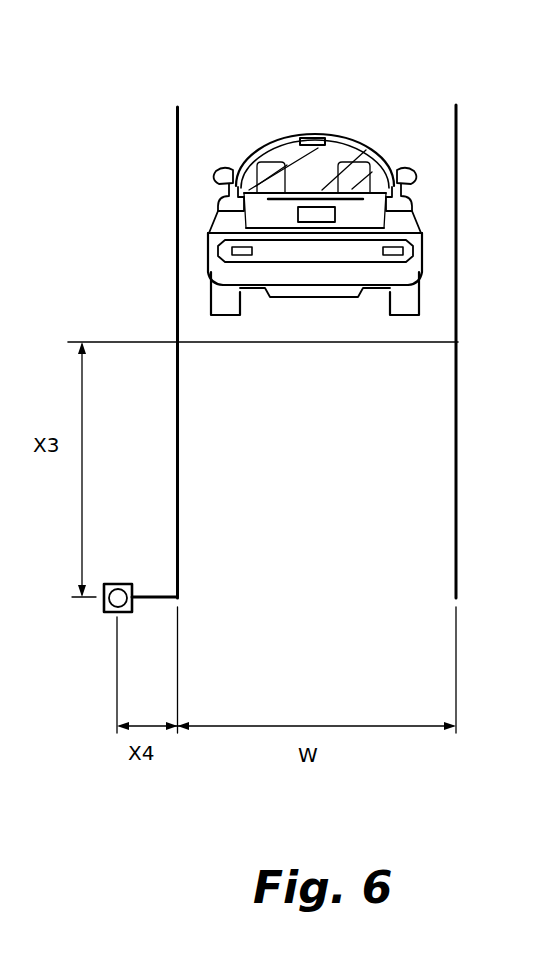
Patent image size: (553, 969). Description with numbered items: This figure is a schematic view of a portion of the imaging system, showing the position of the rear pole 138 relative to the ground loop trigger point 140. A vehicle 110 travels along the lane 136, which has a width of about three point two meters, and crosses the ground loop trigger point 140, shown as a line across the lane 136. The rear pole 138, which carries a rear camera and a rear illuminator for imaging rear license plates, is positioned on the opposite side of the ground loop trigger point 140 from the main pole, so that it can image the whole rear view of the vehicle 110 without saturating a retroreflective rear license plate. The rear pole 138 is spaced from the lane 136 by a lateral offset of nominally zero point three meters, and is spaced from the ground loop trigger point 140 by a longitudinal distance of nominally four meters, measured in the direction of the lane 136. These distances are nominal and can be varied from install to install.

The vehicle 110 is at (333, 104).
The lane 136 is at (323, 522).
The rear pole 138 is at (95, 622).
The ground loop trigger point 140 is at (458, 342).